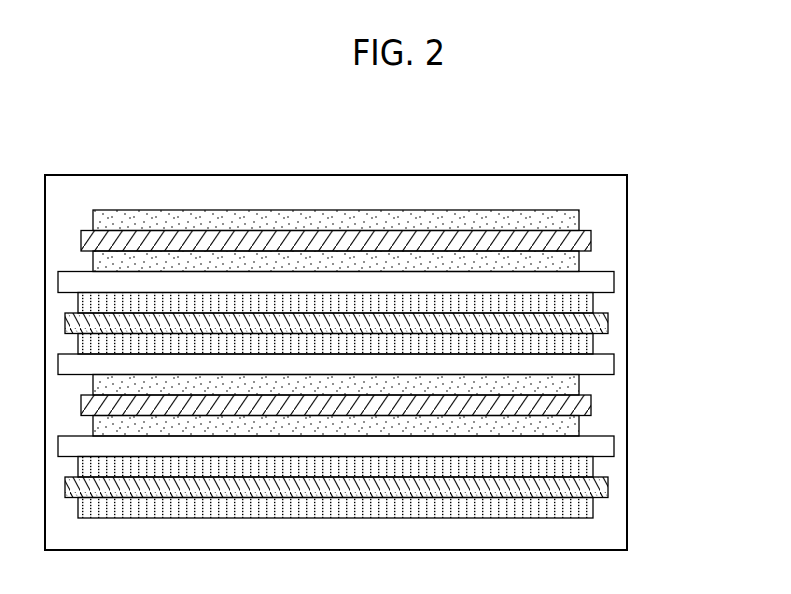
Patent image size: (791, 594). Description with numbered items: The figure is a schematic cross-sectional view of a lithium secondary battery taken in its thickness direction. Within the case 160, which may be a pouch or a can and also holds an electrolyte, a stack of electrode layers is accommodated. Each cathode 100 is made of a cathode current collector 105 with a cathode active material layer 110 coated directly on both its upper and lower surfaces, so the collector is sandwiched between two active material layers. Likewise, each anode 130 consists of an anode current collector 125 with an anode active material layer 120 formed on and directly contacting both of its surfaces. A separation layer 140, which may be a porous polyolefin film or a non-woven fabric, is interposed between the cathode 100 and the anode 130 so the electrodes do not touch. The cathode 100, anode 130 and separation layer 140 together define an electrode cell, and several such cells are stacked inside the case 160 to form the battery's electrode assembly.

The cathode 100 is at (416, 243).
The cathode current collector 105 is at (592, 240).
The cathode active material layer 110 is at (572, 221).
The anode active material layer 120 is at (590, 302).
The anode current collector 125 is at (605, 323).
The anode 130 is at (408, 326).
The separation layer 140 is at (505, 280).
The case 160 is at (628, 485).